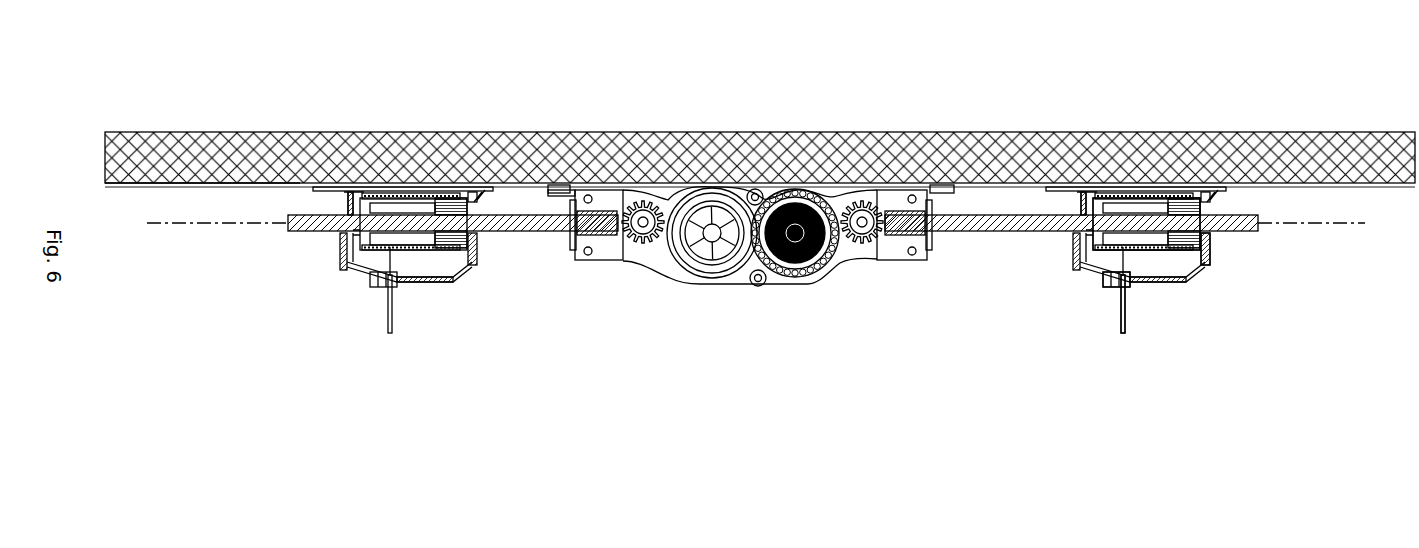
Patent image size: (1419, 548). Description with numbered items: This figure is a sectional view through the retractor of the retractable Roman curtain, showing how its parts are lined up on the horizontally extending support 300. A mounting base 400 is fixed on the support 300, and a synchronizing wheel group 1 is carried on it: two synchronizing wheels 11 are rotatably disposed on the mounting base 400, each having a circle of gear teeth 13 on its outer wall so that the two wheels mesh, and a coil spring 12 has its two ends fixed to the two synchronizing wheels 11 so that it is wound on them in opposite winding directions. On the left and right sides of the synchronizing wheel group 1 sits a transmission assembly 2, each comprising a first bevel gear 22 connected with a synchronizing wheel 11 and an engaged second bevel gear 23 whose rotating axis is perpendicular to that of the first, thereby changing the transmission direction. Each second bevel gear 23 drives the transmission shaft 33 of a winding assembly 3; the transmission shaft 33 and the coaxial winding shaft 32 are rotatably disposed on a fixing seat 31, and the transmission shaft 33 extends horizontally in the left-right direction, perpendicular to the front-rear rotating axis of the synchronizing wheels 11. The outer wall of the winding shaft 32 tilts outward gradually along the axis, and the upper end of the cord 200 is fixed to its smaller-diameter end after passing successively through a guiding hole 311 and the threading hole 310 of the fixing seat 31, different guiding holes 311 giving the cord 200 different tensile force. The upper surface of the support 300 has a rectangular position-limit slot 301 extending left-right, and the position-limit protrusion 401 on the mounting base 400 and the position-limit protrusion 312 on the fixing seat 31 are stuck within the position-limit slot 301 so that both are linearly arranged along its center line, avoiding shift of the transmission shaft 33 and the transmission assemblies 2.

The synchronizing wheel group 1 is at (713, 233).
The transmission assembly 2 is at (882, 282).
The winding assembly 3 is at (1119, 336).
The synchronizing wheel 11 is at (686, 268).
The coil spring 12 is at (777, 265).
The gear teeth 13 is at (754, 189).
The first bevel gear 22 is at (625, 255).
The second bevel gear 23 is at (588, 258).
The fixing seat 31 is at (1193, 255).
The winding shaft 32 is at (1118, 255).
The transmission shaft 33 is at (1240, 233).
The cord 200 is at (1120, 295).
The support 300 is at (1002, 131).
The position-limit slot 301 is at (178, 186).
The threading hole 310 is at (1078, 270).
The guiding hole 311 is at (1107, 290).
The position-limit protrusion 312 is at (333, 187).
The mounting base 400 is at (905, 188).
The position-limit protrusion 401 is at (548, 190).